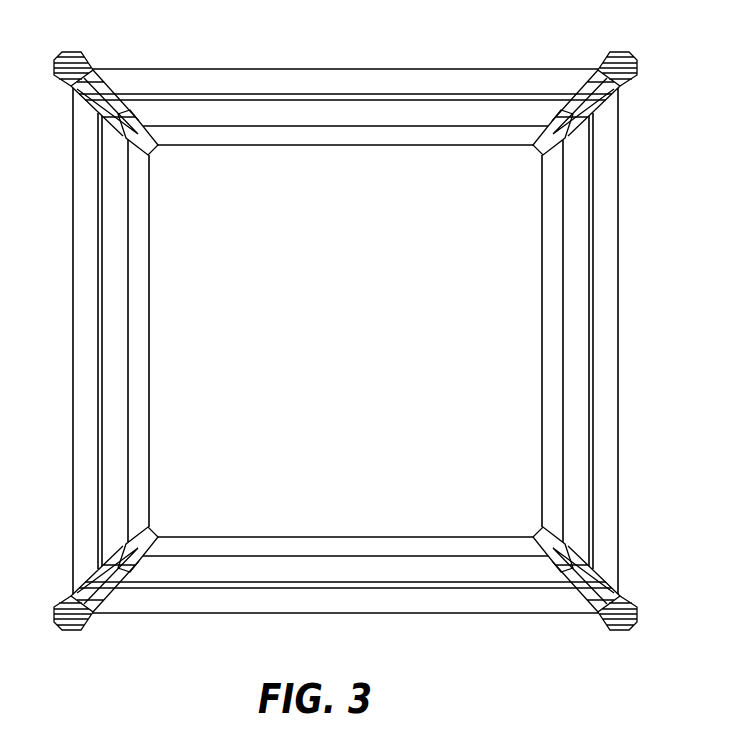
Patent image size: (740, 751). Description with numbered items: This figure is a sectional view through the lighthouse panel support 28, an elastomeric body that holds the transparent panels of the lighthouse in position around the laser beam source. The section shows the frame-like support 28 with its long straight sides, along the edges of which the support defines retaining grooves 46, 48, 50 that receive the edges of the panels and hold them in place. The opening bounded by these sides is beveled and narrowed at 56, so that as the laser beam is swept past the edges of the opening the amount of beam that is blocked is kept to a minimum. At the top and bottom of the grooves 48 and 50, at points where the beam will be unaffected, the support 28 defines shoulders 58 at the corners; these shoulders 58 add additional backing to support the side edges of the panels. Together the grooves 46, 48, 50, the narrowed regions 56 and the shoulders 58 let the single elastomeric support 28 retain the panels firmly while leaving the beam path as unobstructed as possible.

The lighthouse panel support 28 is at (348, 353).
The retaining groove 46 is at (374, 108).
The retaining groove 48 is at (113, 92).
The retaining groove 50 is at (80, 86).
The beveled and narrowed portion of opening 56 is at (115, 124).
The shoulder 58 is at (558, 572).